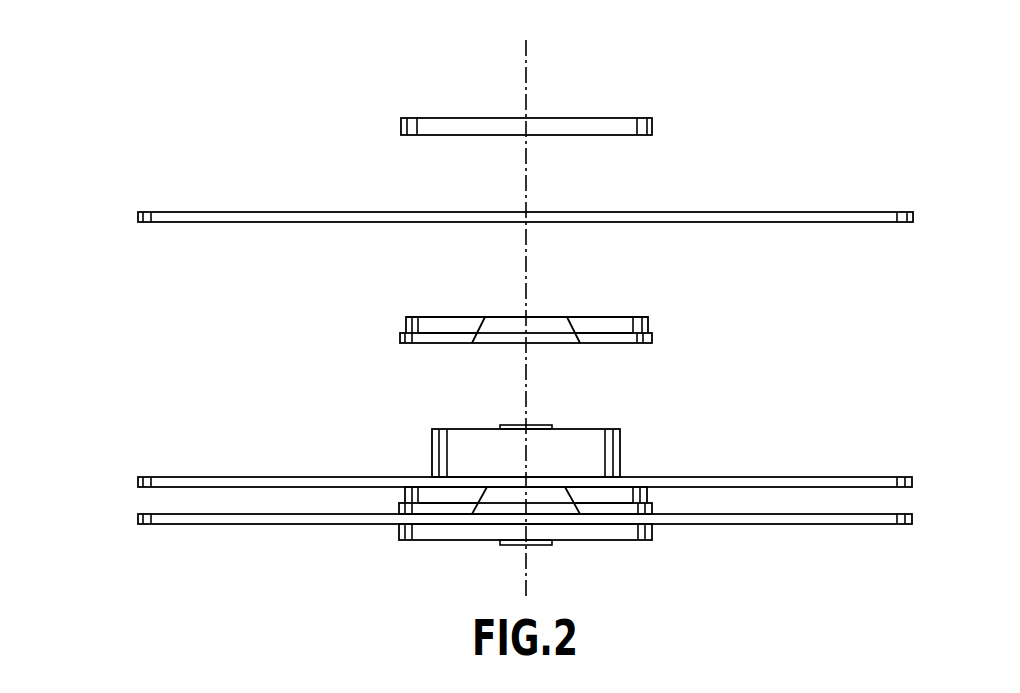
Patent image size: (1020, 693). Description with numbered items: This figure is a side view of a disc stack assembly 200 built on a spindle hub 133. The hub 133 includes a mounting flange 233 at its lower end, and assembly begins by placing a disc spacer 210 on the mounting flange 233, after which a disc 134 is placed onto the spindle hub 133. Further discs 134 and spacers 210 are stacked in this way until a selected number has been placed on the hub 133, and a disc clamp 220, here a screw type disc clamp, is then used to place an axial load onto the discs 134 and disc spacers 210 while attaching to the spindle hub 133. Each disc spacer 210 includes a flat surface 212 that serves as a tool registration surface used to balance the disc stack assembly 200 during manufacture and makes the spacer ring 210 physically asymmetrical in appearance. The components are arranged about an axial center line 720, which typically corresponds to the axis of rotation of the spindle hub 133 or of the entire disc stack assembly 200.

The disc stack assembly 200 is at (807, 127).
The axial center line 720 is at (527, 81).
The disc clamp 220 is at (435, 118).
The disc 134 is at (137, 214).
The disc spacer 210 is at (516, 398).
The flat surface 212 is at (543, 323).
The spindle hub 133 is at (430, 450).
The mounting flange 233 is at (652, 532).